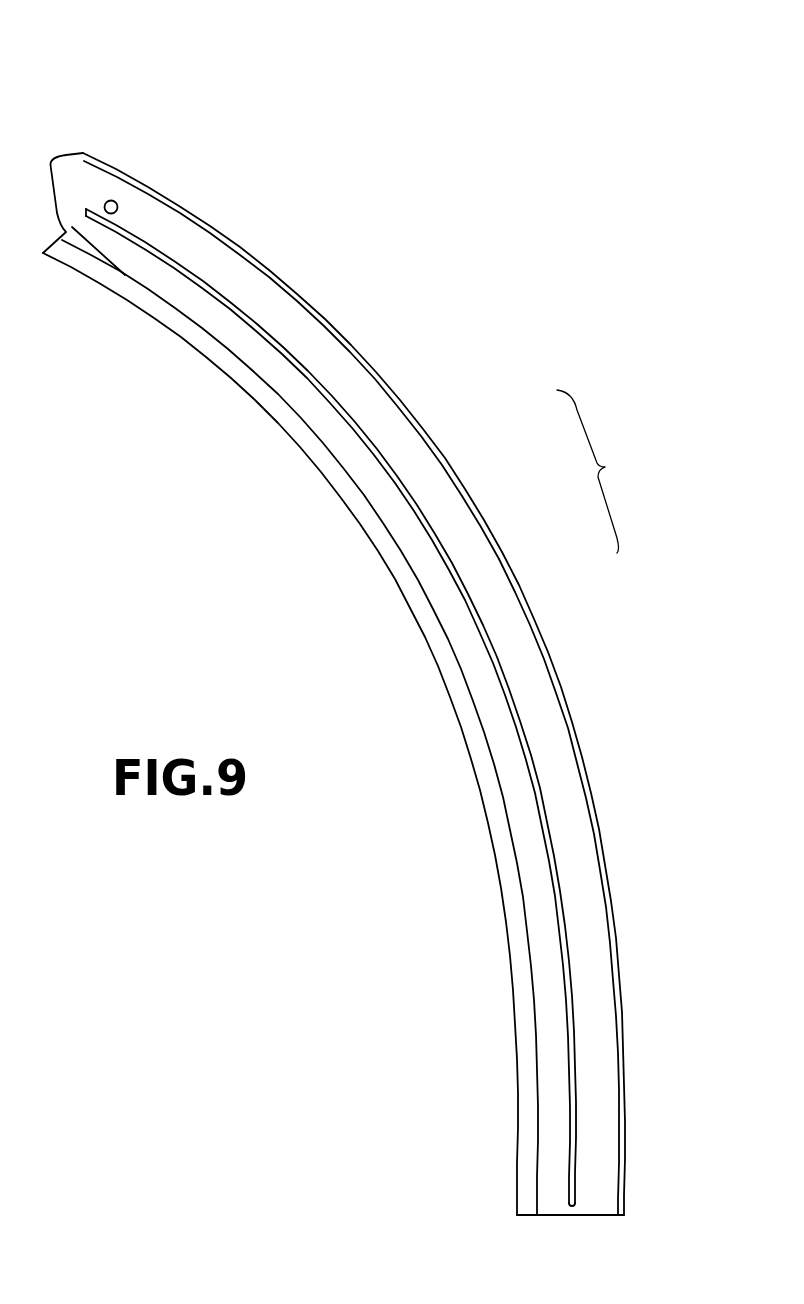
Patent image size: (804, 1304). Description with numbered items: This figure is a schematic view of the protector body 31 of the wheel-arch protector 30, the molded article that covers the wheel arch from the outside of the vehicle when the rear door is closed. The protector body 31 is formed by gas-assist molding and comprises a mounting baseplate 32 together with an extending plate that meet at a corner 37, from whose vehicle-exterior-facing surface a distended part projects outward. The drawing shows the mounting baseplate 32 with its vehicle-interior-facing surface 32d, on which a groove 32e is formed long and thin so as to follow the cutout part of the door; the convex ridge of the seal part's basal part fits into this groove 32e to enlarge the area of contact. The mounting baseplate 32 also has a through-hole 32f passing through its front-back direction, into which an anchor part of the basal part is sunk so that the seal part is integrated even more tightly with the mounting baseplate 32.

The wheel-arch protector 30 is at (127, 148).
The protector body 31 is at (604, 471).
The mounting baseplate 32 is at (428, 473).
The vehicle-interior-facing surface 32d is at (203, 250).
The groove 32e is at (252, 317).
The through-hole 32f is at (323, 388).
The corner 37 is at (405, 555).